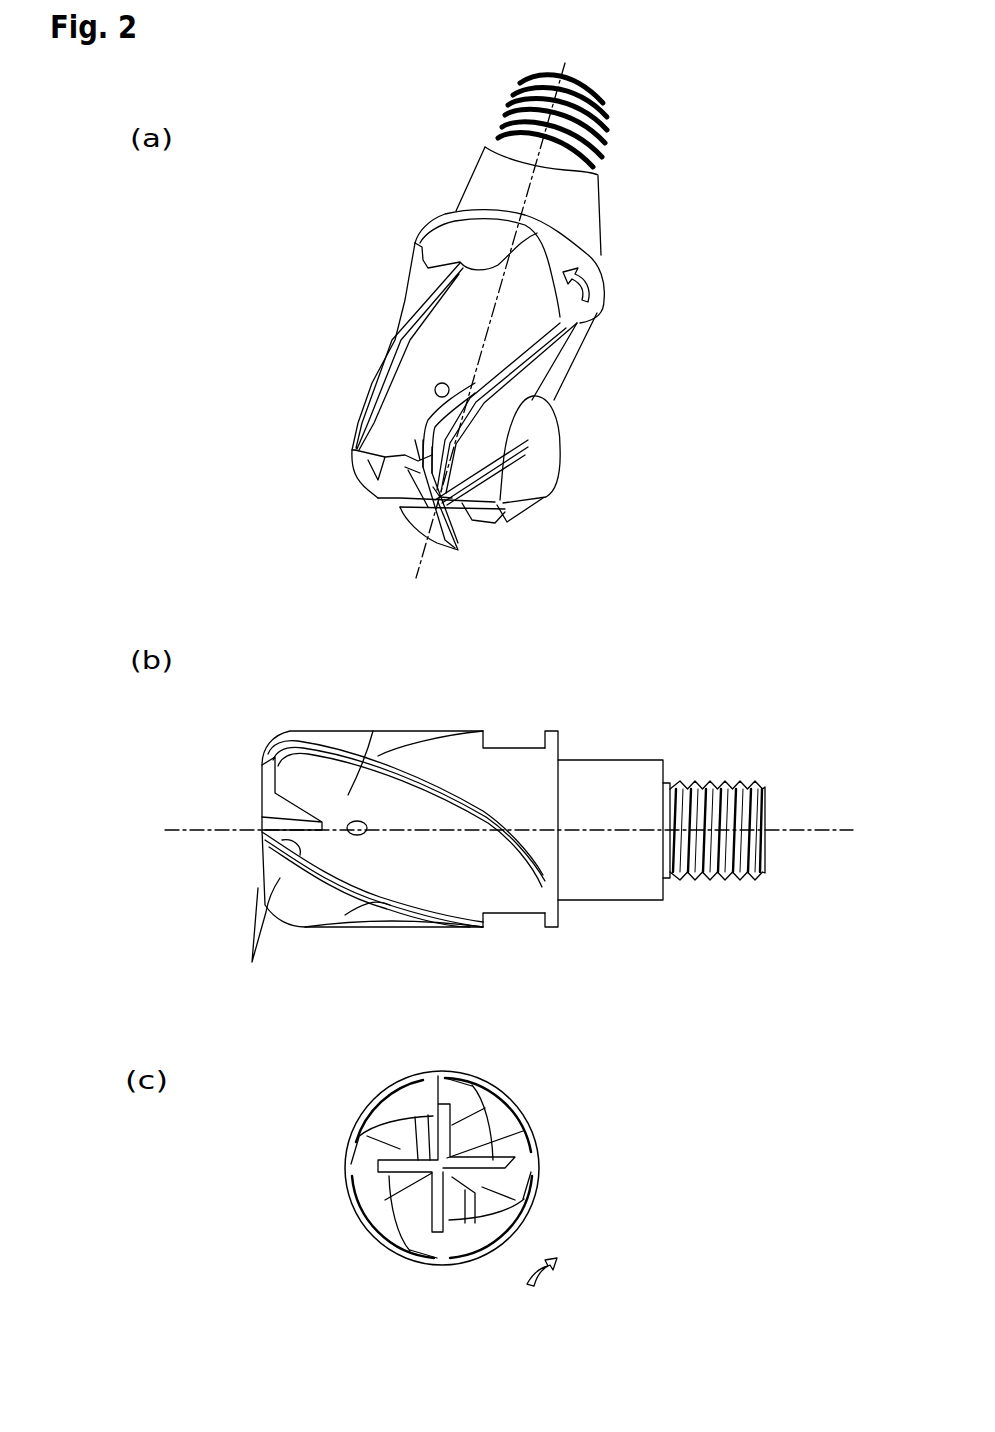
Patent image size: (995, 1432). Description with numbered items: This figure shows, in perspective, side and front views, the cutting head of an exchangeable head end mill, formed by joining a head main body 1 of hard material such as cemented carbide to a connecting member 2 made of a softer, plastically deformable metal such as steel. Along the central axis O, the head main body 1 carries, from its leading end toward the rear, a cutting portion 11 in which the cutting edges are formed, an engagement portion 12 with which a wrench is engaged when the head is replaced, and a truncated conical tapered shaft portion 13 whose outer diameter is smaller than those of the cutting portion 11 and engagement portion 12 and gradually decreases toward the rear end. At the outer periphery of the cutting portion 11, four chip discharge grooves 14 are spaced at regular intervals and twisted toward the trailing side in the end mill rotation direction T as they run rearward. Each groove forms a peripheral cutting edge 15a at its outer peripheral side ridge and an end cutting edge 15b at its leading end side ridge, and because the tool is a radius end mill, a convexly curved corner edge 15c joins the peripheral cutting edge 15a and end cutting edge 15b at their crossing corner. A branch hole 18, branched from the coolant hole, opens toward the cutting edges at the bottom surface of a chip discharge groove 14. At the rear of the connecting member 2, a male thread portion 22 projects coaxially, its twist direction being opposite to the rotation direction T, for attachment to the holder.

The head main body 1 is at (509, 688).
The connecting member 2 is at (588, 511).
The cutting portion 11 is at (409, 778).
The engagement portion 12 is at (390, 242).
The tapered shaft portion 13 is at (448, 183).
The chip discharge groove 14 is at (395, 418).
The peripheral cutting edge 15a is at (387, 345).
The end cutting edge 15b is at (352, 449).
The corner edge 15c is at (424, 432).
The branch hole 18 is at (444, 382).
The male thread portion 22 is at (605, 137).
The central axis O is at (583, 67).
The end mill rotation direction T is at (563, 784).